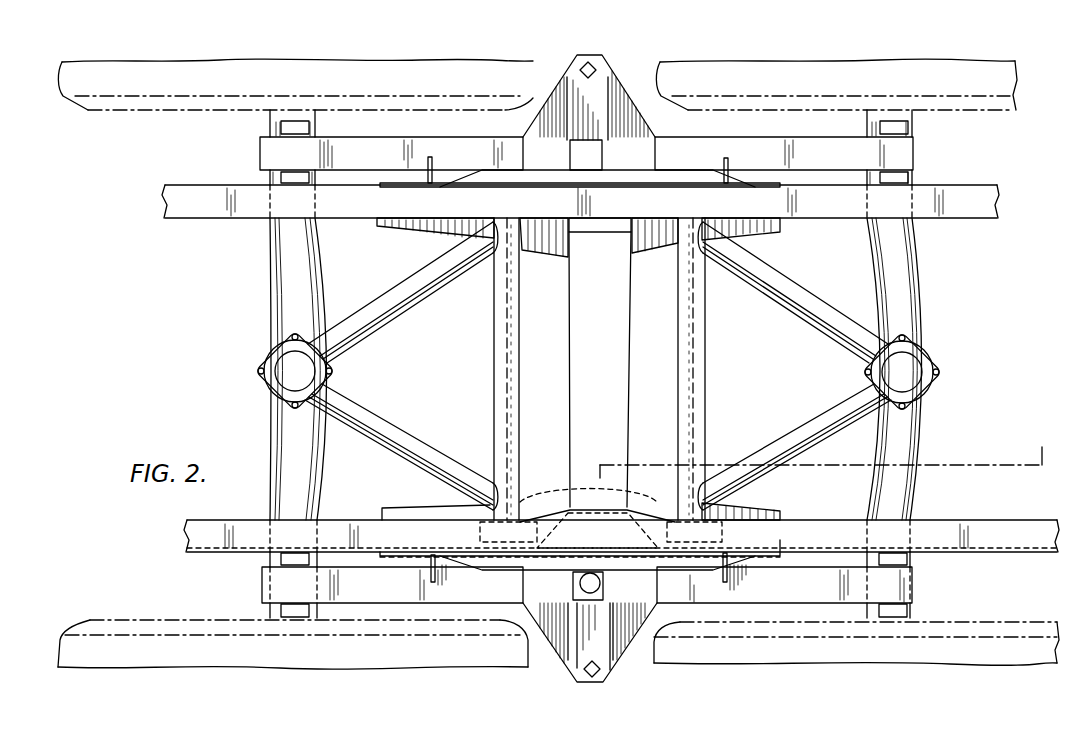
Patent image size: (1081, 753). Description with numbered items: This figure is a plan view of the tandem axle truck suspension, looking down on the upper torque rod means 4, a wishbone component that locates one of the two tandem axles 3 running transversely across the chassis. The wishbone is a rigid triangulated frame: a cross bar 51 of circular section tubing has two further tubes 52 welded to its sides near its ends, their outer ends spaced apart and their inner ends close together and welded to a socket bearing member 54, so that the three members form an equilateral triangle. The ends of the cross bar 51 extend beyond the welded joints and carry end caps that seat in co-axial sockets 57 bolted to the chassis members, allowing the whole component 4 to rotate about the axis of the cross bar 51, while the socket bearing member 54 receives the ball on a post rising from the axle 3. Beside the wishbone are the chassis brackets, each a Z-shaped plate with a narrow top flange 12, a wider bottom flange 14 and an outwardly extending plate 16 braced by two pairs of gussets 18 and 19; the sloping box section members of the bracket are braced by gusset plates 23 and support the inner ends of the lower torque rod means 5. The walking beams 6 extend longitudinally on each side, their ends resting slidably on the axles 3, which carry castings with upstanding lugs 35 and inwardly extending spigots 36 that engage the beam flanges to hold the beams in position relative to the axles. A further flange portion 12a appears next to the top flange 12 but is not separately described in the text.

The tandem axle 3 is at (282, 252).
The upper torque rod means 4 is at (686, 487).
The lower torque rod means 5 is at (239, 364).
The walking beam 6 is at (424, 147).
The top flange 12 is at (683, 180).
The lower plate 12a is at (763, 550).
The bottom flange 14 is at (738, 222).
The outwardly extending plate 16 is at (640, 130).
The gussets 18 is at (605, 103).
The gussets 19 is at (527, 598).
The gusset plates 23 is at (430, 568).
The upstanding lugs 35 is at (300, 612).
The spigots 36 is at (300, 600).
The cross bar 51 is at (493, 357).
The tubes 52 is at (400, 308).
The socket bearing member 54 is at (284, 378).
The sockets 57 is at (527, 522).